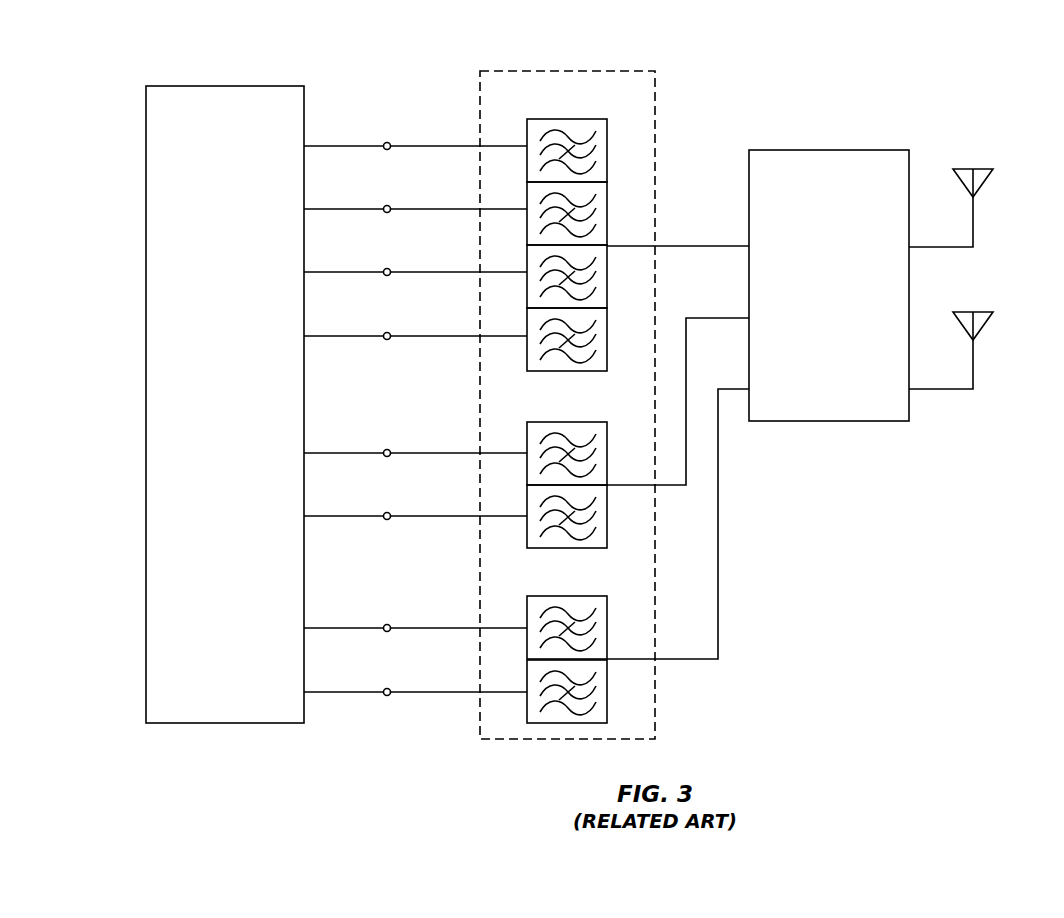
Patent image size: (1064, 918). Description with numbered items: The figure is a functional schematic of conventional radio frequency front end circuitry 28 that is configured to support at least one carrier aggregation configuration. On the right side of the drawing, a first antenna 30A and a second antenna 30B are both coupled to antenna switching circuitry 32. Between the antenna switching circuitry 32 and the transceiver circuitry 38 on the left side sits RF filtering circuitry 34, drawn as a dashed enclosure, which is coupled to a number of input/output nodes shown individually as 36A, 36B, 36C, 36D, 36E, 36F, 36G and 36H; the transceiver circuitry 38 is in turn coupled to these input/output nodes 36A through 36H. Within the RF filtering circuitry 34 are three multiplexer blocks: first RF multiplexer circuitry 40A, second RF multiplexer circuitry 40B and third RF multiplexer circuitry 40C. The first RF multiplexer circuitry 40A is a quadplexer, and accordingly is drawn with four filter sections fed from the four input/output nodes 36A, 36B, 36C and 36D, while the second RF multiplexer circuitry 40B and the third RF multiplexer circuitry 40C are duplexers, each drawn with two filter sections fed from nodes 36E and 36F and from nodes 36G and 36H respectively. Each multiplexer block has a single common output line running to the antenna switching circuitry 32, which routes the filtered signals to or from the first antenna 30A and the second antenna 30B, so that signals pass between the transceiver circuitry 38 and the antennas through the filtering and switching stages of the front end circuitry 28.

The radio frequency (RF) front end circuitry 28 is at (830, 72).
The first antenna 30A is at (983, 169).
The second antenna 30B is at (983, 312).
The antenna switching circuitry 32 is at (829, 285).
The RF filtering circuitry 34 is at (510, 741).
The input/output node 36A is at (388, 143).
The input/output node 36B is at (388, 206).
The input/output node 36C is at (388, 269).
The input/output node 36D is at (388, 333).
The input/output node 36E is at (388, 450).
The input/output node 36F is at (388, 513).
The input/output node 36G is at (388, 625).
The input/output node 36H is at (388, 689).
The transceiver circuitry 38 is at (225, 404).
The first RF multiplexer circuitry 40A is at (580, 119).
The second RF multiplexer circuitry 40B is at (580, 422).
The third RF multiplexer circuitry 40C is at (580, 596).